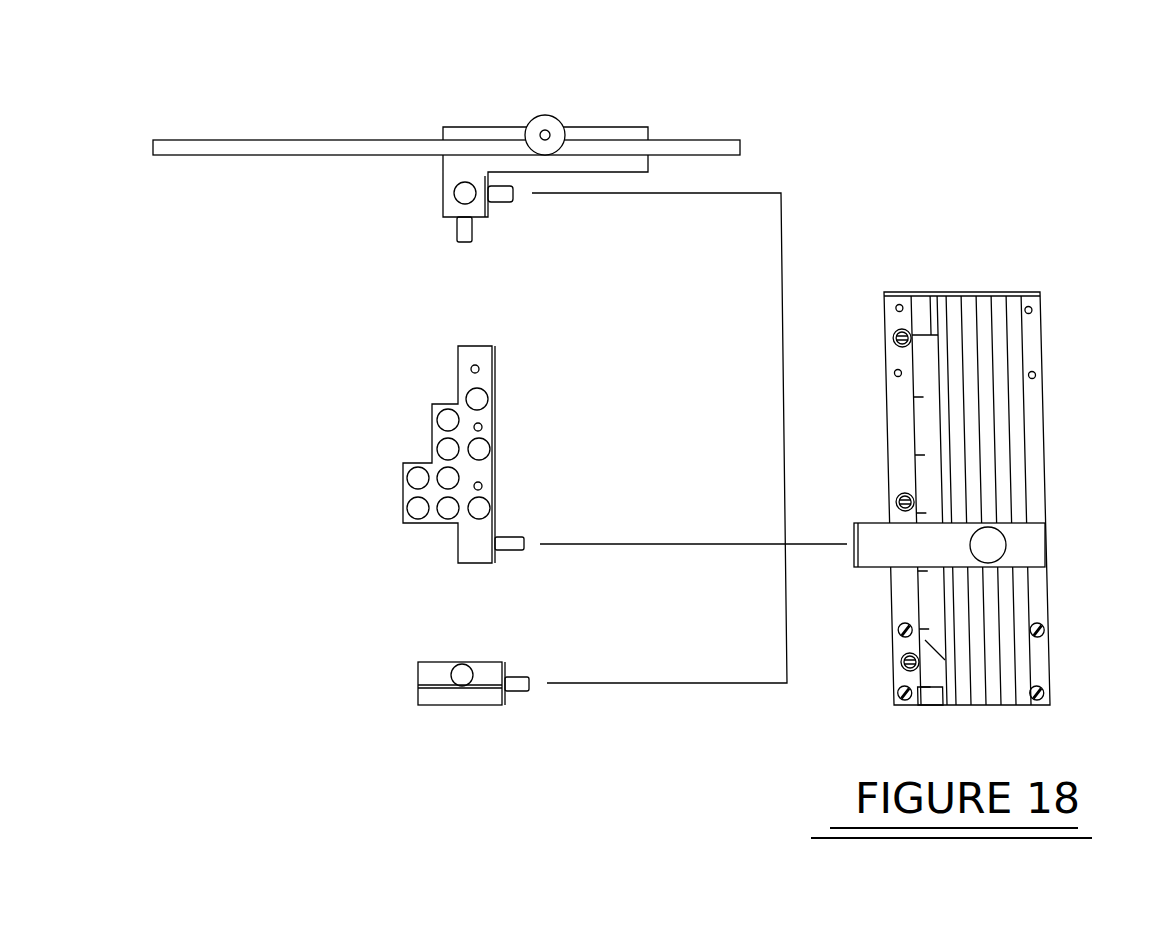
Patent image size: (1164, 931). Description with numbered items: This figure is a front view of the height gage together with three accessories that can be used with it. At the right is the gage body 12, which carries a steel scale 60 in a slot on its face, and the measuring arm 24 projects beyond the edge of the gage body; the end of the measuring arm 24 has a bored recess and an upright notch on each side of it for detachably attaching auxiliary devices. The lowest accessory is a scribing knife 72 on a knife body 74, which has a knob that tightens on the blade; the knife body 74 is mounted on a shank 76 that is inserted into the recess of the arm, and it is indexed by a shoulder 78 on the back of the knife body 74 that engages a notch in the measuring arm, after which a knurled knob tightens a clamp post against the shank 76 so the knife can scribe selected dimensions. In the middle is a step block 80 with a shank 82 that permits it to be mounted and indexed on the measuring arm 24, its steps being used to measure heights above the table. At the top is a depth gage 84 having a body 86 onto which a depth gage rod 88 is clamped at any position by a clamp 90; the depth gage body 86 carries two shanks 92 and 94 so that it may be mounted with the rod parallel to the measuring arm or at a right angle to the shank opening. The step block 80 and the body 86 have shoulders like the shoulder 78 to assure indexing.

The gage body 12 is at (1043, 412).
The measuring arm 24 is at (1037, 545).
The steel scale 60 is at (935, 657).
The scribing knife 72 is at (454, 690).
The knife body 74 is at (445, 705).
The shank 76 is at (515, 692).
The shoulder 78 is at (505, 668).
The step block 80 is at (430, 432).
The shank 82 is at (512, 534).
The depth gage 84 is at (446, 135).
The depth gage body 86 is at (437, 188).
The depth gage rod 88 is at (348, 140).
The clamp 90 is at (537, 116).
The shank 92 is at (452, 230).
The shank 94 is at (508, 202).